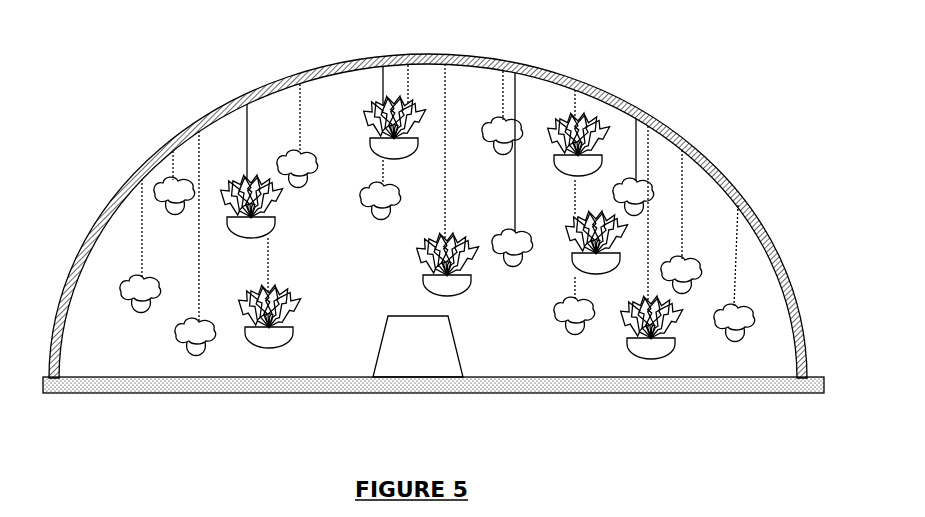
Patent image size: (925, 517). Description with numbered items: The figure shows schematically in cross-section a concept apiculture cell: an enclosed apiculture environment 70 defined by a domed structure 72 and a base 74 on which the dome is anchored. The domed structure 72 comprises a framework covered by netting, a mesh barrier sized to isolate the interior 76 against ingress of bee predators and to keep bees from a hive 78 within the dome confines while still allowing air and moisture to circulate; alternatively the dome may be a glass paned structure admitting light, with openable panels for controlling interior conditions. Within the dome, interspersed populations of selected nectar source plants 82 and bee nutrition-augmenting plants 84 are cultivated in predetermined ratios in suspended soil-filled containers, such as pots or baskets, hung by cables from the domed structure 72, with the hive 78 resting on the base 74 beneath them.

The enclosed apiculture environment 70 is at (172, 86).
The domed structure 72 is at (148, 157).
The base 74 is at (106, 372).
The interior 76 is at (347, 119).
The hive 78 is at (428, 353).
The nectar source plants 82 is at (117, 280).
The bee nutrition-augmenting plants 84 is at (592, 123).